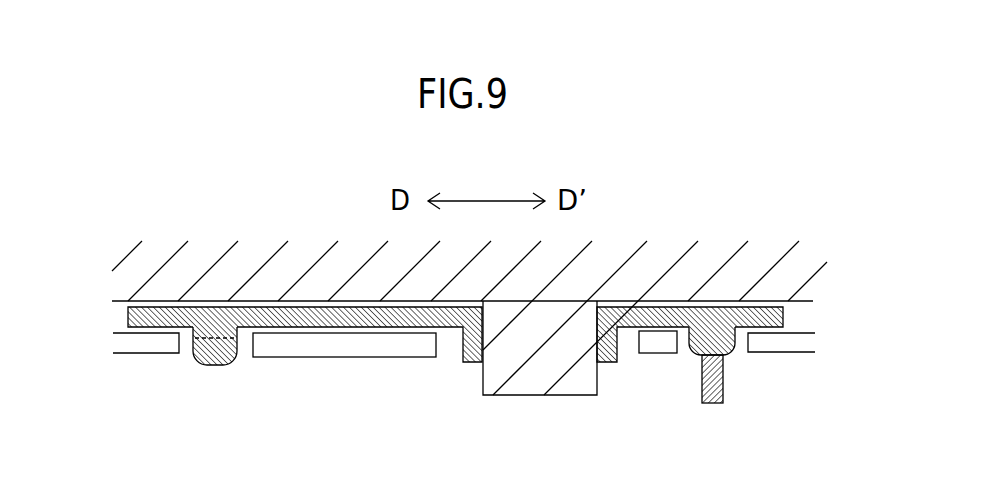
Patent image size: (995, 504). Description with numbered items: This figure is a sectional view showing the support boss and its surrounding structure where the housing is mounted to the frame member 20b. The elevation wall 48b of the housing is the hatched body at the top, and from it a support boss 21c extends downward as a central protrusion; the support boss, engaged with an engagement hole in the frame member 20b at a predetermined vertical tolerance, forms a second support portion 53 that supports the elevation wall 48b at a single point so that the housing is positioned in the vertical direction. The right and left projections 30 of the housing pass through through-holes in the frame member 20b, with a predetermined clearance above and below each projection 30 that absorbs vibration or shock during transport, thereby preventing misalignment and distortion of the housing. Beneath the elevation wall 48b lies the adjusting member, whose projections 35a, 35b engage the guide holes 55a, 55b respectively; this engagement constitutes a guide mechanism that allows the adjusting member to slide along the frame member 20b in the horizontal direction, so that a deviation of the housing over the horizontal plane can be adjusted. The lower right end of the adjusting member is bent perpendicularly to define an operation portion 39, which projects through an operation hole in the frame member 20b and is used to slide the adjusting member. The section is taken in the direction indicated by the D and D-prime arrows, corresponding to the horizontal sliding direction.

The elevation wall 48b is at (723, 240).
The protrusion of second substrate 21c is at (538, 385).
The projection 30 is at (223, 307).
The projection 35a is at (197, 365).
The projection 35b is at (735, 350).
The operation portion 39 is at (710, 407).
The frame member 20b is at (140, 353).
The guide hole 55a is at (242, 355).
The second support portion 53 is at (437, 368).
The guide hole 55b is at (680, 353).